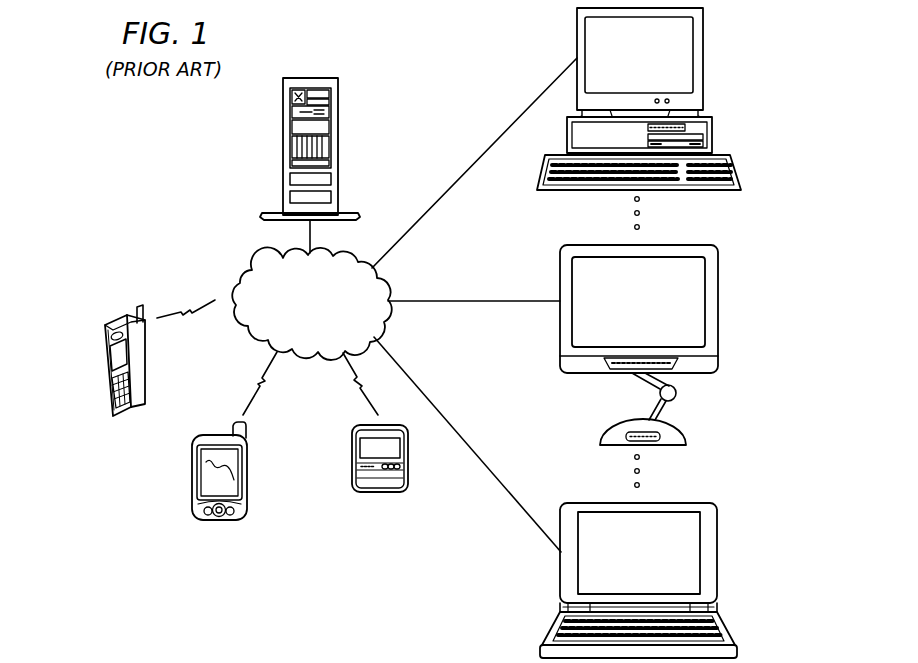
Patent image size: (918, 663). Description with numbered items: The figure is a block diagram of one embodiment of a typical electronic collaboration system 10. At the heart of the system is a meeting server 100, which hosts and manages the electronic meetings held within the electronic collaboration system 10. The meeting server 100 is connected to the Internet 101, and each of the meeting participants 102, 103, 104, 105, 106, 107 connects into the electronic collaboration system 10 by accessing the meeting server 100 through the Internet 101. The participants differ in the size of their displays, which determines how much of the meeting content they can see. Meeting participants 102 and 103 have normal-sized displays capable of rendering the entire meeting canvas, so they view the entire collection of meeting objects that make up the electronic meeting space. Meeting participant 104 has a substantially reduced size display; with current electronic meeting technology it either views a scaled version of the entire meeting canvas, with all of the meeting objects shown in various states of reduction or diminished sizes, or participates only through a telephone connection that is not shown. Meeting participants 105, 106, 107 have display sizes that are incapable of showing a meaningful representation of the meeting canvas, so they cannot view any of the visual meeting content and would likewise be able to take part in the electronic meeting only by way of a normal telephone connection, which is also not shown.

The electronic collaboration system 10 is at (156, 176).
The meeting server 100 is at (283, 147).
The Internet 101 is at (253, 268).
The meeting participant 102 is at (703, 52).
The meeting participant 103 is at (718, 297).
The meeting participant 104 is at (718, 558).
The meeting participant 105 is at (378, 494).
The meeting participant 106 is at (192, 480).
The meeting participant 107 is at (110, 370).